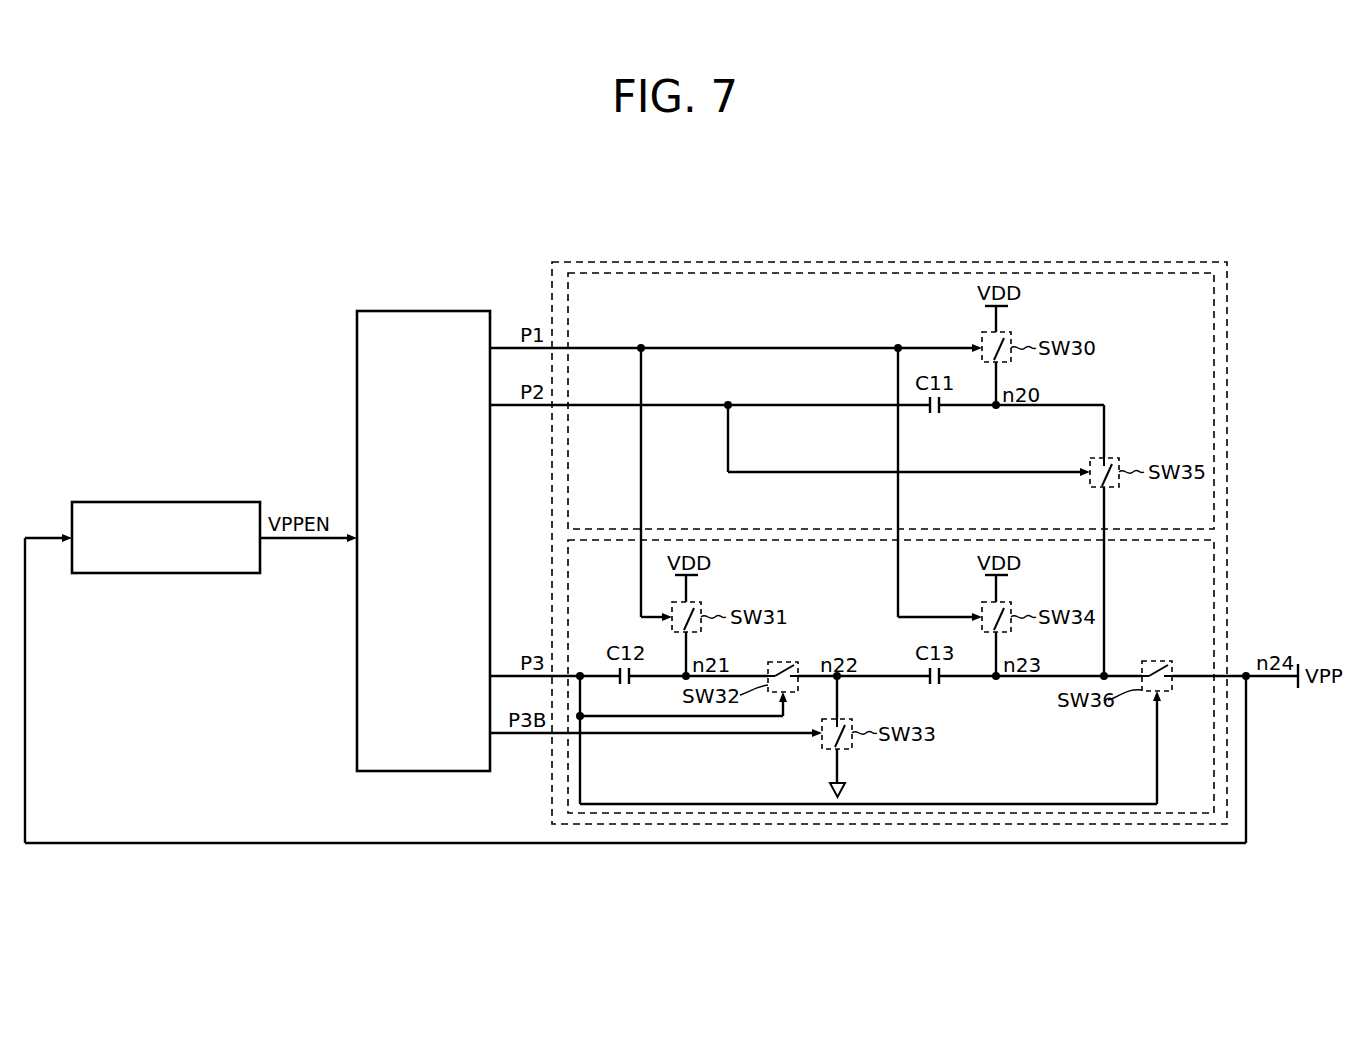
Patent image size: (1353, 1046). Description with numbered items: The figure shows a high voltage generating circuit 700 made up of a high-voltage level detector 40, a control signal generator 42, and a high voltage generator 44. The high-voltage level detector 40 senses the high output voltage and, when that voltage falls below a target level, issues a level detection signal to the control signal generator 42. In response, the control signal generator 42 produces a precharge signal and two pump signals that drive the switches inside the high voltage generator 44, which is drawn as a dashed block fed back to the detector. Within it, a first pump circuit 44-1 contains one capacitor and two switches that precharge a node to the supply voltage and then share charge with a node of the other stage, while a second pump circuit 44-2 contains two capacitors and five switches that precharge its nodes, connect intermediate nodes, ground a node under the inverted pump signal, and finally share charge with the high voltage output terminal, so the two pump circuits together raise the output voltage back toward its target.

The high-voltage level detector 40 is at (193, 502).
The control signal generator 42 is at (424, 311).
The high voltage generator 44 is at (889, 476).
The first pump circuit 44-1 is at (1214, 400).
The second pump circuit 44-2 is at (1214, 607).
The high voltage generating circuit 700 is at (1077, 234).